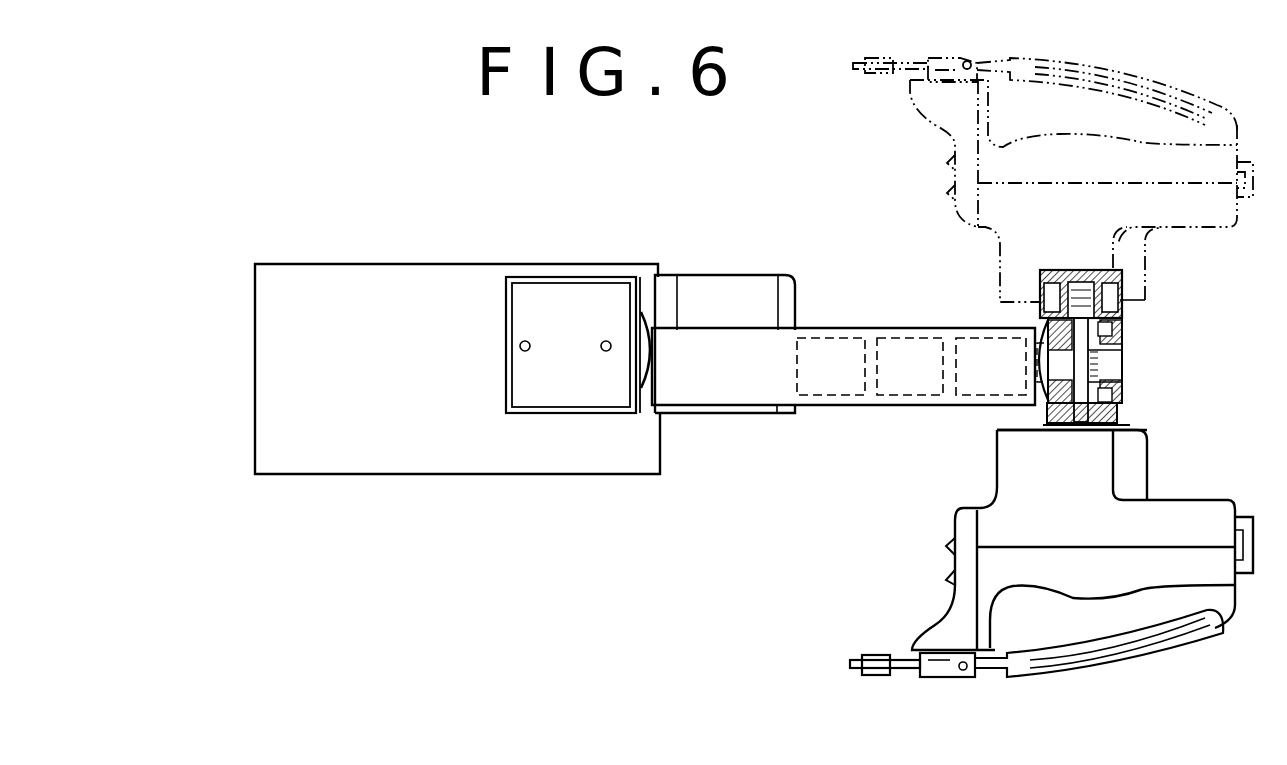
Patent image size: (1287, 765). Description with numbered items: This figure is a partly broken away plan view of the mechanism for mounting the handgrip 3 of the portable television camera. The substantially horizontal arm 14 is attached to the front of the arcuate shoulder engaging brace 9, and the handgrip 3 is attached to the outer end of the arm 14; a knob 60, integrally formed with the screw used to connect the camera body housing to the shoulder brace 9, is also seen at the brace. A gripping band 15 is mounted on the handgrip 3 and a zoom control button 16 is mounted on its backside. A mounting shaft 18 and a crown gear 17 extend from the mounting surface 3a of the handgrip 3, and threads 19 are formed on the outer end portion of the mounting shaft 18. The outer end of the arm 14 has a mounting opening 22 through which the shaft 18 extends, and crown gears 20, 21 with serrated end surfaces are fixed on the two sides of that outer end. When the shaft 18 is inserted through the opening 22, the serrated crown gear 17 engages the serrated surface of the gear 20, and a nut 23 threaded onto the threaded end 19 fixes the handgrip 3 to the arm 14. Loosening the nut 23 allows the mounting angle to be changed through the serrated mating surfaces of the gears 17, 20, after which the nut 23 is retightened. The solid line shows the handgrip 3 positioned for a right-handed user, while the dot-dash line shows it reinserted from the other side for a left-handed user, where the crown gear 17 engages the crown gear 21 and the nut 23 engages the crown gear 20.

The handgrip 3 is at (1205, 520).
The mounting surface 3a is at (1020, 416).
The arcuate shoulder engaging brace 9 is at (395, 280).
The arm 14 is at (869, 335).
The gripping band 15 is at (1228, 612).
The zoom control button 16 is at (947, 577).
The crown gear 17 is at (1118, 418).
The mounting shaft 18 is at (1078, 360).
The threads 19 is at (1079, 270).
The crown gear 20 is at (1122, 398).
The crown gear 21 is at (1124, 330).
The mounting opening 22 is at (1044, 366).
The nut 23 is at (1122, 279).
The knob 60 is at (645, 322).